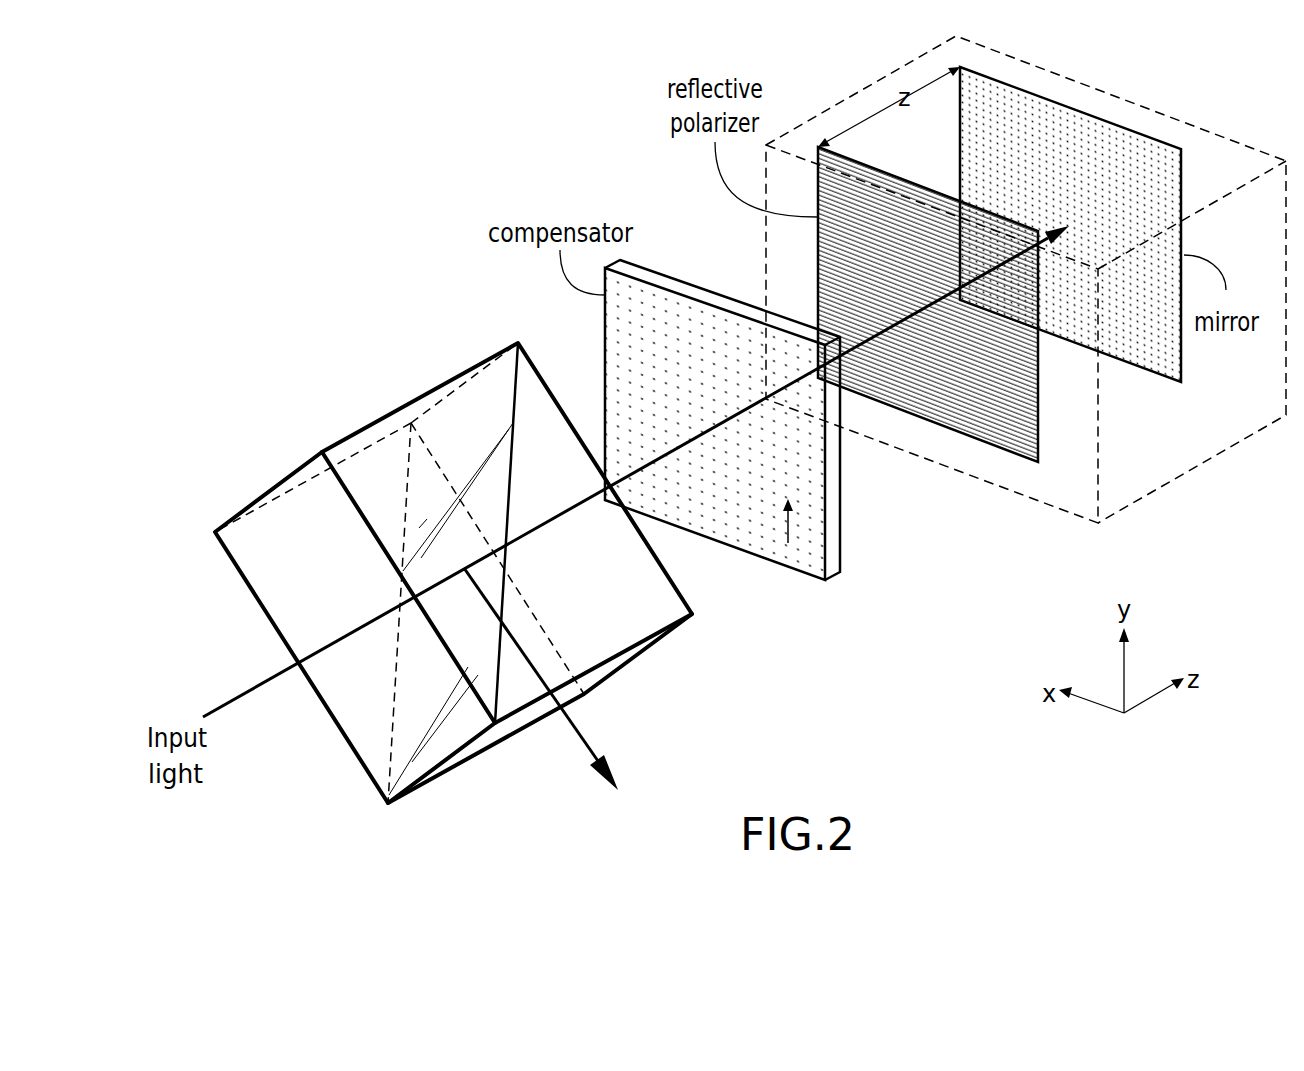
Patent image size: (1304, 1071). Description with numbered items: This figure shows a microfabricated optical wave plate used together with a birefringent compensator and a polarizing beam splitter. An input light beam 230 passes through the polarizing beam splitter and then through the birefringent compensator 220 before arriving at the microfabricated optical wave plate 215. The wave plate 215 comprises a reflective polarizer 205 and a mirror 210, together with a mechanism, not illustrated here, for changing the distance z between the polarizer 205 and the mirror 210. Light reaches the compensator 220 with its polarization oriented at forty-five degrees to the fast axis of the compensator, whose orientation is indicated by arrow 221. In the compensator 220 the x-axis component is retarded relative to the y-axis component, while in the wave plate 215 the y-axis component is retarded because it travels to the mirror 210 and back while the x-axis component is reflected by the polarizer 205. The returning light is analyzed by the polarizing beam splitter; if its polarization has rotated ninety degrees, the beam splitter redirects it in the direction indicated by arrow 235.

The reflective polarizer 205 is at (1006, 456).
The mirror 210 is at (1092, 112).
The microfabricated optical wave plate 215 is at (1194, 464).
The birefringent compensator 220 is at (836, 582).
The arrow indicating fast axis orientation 221 is at (798, 532).
The input light beam 230 is at (247, 690).
The arrow indicating redirected returning light direction 235 is at (613, 770).